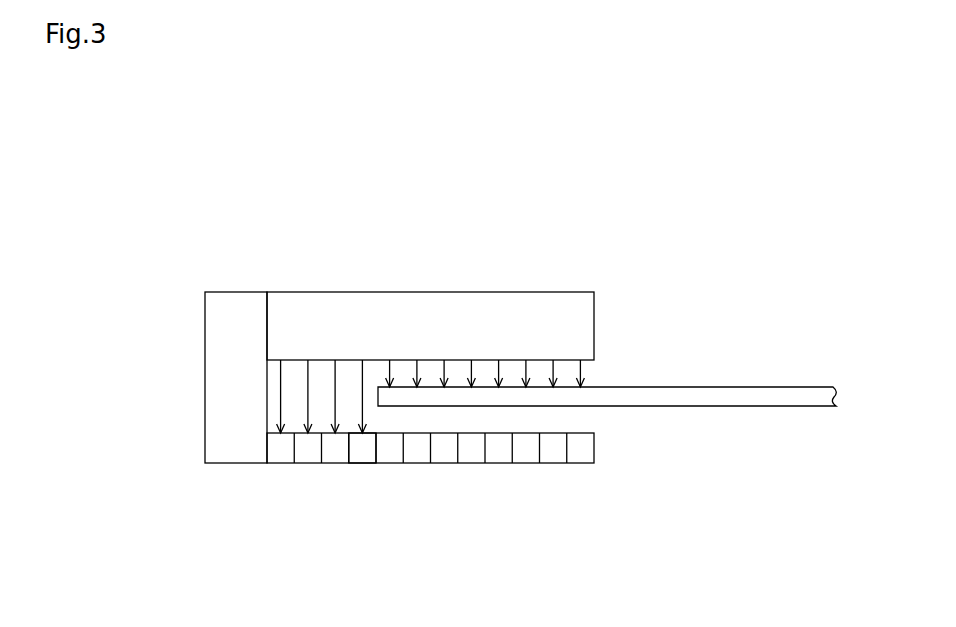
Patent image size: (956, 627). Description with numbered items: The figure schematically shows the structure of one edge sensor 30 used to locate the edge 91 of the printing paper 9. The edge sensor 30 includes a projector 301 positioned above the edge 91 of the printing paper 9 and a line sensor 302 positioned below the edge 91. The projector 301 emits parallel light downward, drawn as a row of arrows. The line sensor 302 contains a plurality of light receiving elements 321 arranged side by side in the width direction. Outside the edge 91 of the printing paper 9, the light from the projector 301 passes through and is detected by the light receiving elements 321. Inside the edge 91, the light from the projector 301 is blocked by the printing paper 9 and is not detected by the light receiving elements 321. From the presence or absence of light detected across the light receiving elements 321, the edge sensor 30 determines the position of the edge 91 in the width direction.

The edge sensor 30 is at (333, 234).
The projector 301 is at (455, 322).
The line sensor 302 is at (471, 472).
The light receiving elements 321 is at (390, 446).
The printing paper 9 is at (693, 397).
The edge 91 is at (375, 397).